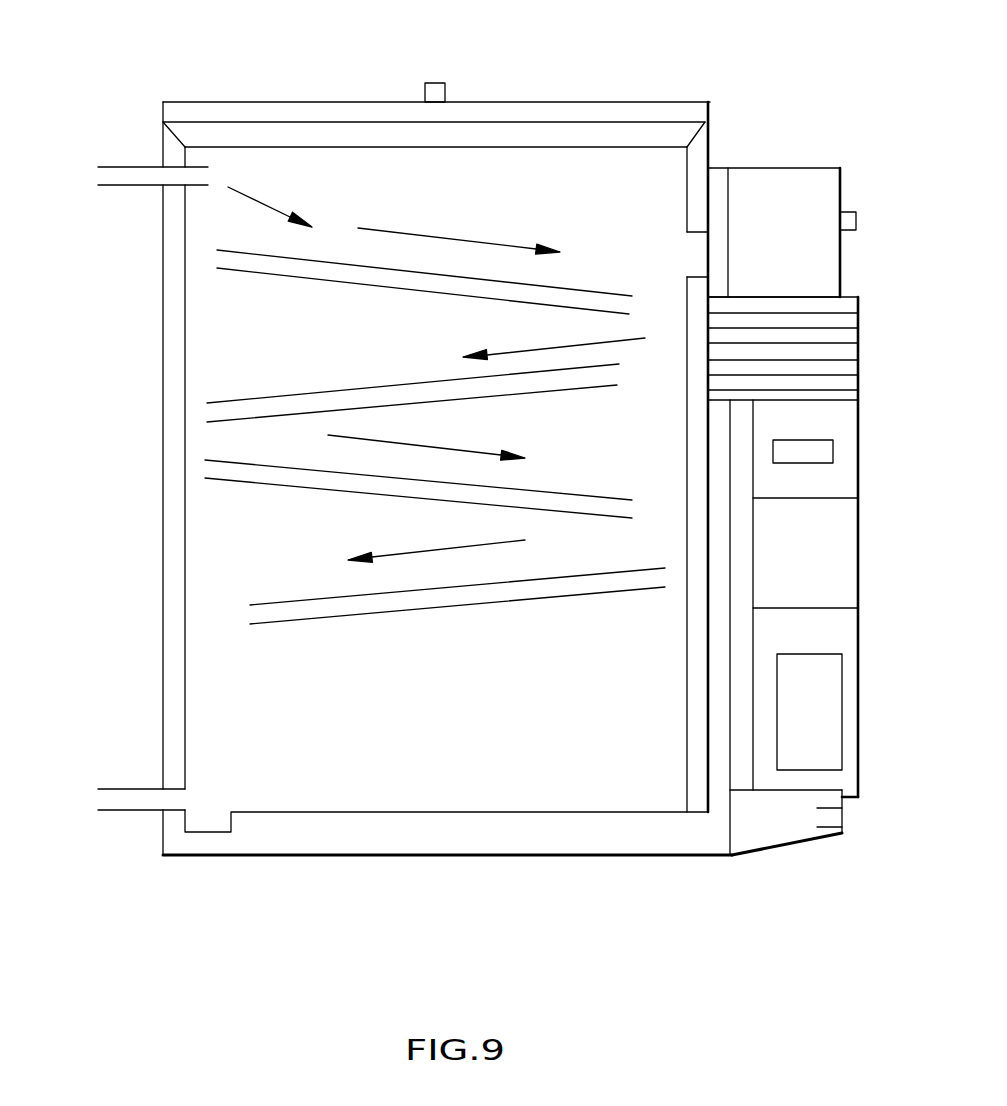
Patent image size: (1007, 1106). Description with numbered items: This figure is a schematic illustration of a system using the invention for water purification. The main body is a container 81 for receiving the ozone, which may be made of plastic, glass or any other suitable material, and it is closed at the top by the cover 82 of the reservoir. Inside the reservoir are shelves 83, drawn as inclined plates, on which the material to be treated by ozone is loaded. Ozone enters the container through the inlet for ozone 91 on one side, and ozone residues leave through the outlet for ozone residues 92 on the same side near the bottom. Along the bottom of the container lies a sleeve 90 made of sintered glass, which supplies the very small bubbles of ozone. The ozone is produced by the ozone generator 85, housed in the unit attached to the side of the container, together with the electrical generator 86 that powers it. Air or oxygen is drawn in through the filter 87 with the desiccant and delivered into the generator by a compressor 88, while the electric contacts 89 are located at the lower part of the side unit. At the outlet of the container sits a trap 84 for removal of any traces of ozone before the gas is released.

The container 81 is at (340, 212).
The cover 82 is at (528, 102).
The shelves 83 is at (560, 297).
The trap 84 is at (830, 168).
The ozone generator 85 is at (820, 313).
The electrical generator 86 is at (833, 455).
The filter with desiccant 87 is at (842, 575).
The compressor 88 is at (830, 743).
The electric contacts 89 is at (790, 810).
The sleeve of sintered glass 90 is at (547, 832).
The inlet for ozone 91 is at (120, 168).
The outlet for ozone residues 92 is at (137, 795).